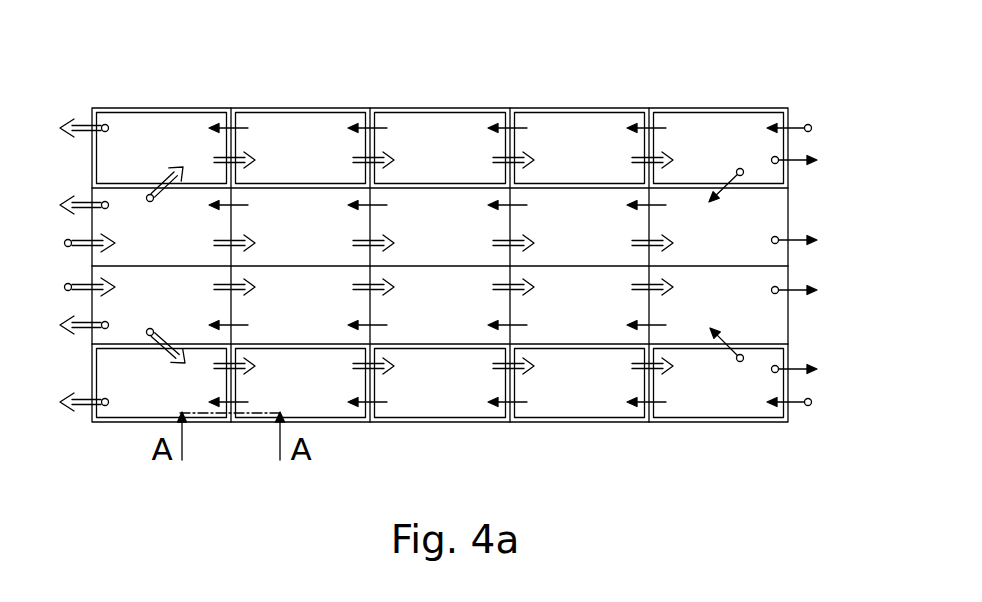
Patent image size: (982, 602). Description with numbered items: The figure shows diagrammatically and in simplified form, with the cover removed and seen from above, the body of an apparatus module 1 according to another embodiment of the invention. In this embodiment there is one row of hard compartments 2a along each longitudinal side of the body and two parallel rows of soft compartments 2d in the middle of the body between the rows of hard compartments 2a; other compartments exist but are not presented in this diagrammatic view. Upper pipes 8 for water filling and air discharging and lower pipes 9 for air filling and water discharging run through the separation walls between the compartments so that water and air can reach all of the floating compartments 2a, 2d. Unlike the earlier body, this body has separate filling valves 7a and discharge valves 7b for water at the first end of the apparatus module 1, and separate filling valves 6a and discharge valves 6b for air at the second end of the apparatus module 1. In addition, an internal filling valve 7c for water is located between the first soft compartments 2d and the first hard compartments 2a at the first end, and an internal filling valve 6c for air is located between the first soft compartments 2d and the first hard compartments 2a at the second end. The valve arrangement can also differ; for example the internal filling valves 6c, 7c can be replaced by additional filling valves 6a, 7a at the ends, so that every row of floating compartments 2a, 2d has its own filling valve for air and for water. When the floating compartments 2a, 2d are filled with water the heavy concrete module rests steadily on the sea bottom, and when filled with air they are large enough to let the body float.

The apparatus module 1 is at (540, 66).
The hard compartments 2a is at (729, 154).
The soft compartments 2d is at (749, 249).
The filling valves for air 6a is at (801, 121).
The discharge valves for air 6b is at (801, 235).
The internal filling valve for air 6c is at (740, 168).
The filling valves for water 7a is at (68, 240).
The discharge valves for water 7b is at (75, 120).
The internal filling valve for water 7c is at (182, 173).
The upper pipes 8 is at (240, 158).
The lower pipes 9 is at (661, 127).